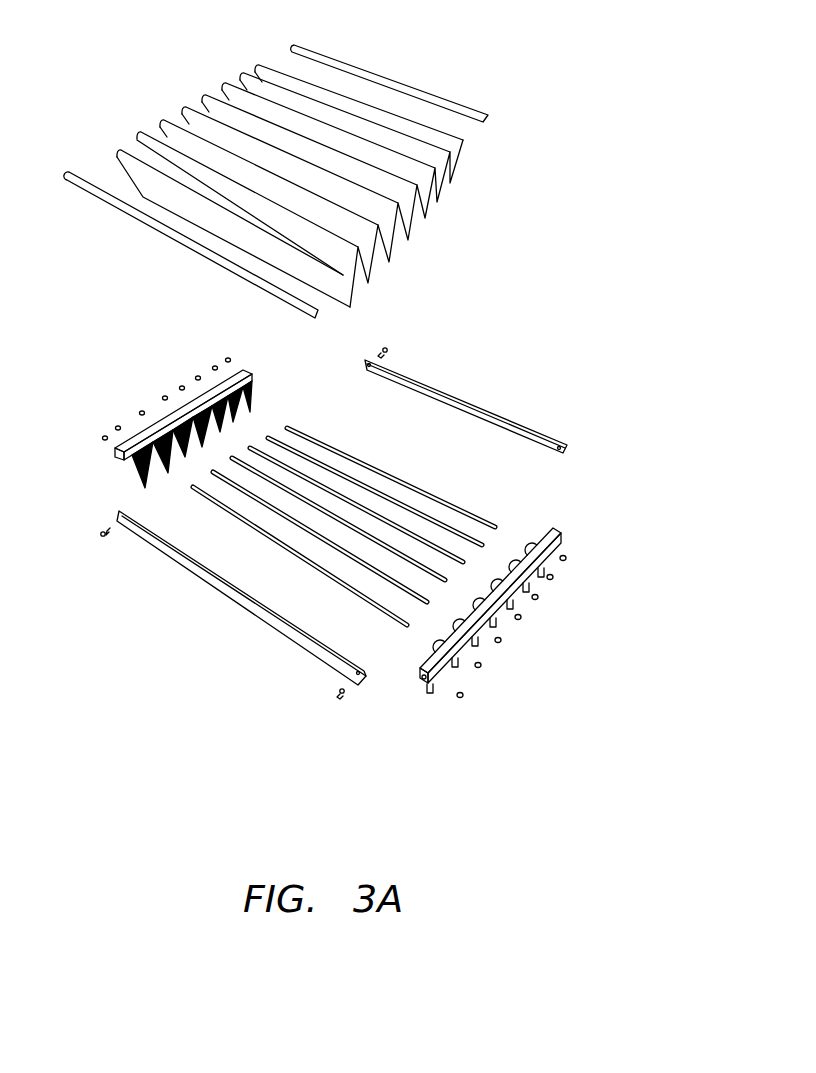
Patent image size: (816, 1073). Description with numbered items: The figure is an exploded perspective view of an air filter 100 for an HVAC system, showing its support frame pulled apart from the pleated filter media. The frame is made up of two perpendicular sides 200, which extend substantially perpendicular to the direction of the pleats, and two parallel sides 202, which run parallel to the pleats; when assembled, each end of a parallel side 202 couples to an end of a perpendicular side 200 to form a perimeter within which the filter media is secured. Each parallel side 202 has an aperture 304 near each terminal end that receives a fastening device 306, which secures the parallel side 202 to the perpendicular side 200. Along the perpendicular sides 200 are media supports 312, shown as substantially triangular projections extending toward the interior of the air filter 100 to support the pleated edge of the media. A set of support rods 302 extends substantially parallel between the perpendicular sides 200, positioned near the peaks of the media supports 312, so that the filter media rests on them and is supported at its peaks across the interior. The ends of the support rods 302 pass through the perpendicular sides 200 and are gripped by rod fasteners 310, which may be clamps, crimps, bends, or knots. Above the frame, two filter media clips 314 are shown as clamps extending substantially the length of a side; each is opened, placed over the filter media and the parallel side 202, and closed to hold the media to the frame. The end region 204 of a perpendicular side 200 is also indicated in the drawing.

The air filter 100 is at (570, 63).
The filter media clip 314 is at (340, 60).
The perpendicular side 200 is at (246, 369).
The end portion of frame member 204 is at (124, 461).
The aperture 304 is at (103, 439).
The media support 312 is at (252, 380).
The rod fastener 310 is at (566, 560).
The support rod 302 is at (430, 492).
The parallel side 202 is at (170, 556).
The fastening device 306 is at (338, 694).